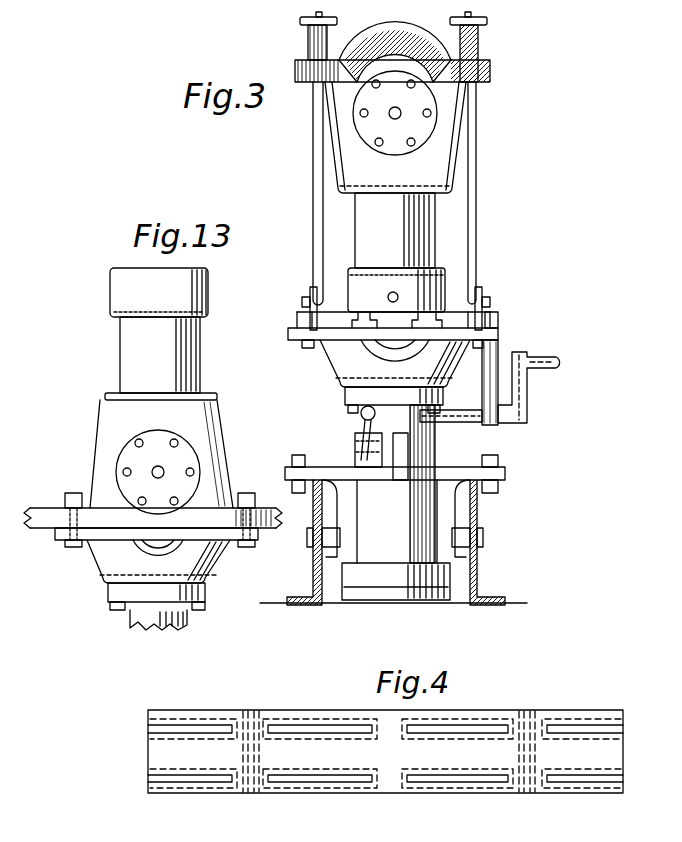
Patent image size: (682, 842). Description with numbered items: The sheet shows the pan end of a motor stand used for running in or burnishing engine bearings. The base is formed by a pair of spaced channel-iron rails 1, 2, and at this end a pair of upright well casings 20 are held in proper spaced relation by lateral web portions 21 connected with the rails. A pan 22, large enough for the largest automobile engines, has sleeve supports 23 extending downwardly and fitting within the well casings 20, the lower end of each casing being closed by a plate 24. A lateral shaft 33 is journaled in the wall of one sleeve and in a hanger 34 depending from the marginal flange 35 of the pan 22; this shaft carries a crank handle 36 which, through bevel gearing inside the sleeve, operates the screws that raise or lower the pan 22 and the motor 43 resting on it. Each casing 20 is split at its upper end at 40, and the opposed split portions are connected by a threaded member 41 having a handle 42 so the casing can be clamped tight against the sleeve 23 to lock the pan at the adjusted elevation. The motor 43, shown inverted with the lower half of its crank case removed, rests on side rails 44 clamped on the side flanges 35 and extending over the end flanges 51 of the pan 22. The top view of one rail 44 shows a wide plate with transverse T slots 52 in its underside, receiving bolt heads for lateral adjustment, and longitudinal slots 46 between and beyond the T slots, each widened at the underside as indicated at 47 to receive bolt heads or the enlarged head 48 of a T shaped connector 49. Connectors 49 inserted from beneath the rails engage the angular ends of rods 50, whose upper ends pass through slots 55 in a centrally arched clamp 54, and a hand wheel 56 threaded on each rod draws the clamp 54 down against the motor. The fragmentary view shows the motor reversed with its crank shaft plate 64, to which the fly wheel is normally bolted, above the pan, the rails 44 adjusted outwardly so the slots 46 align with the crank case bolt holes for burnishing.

In FIG. 3, the rail 1 is at (315, 570).
In FIG. 3, the rail 2 is at (478, 572).
In FIG. 3, the well casing 20 is at (397, 521).
In FIG. 3, the lateral web portion 21 is at (328, 463).
In FIG. 3, the pan 22 is at (340, 364).
In FIG. 13, the pan 22 is at (103, 568).
In FIG. 13, the sleeve support 23 is at (132, 617).
In FIG. 3, the plate 24 is at (393, 592).
In FIG. 3, the shaft 33 is at (462, 410).
In FIG. 3, the hanger 34 is at (495, 355).
In FIG. 3, the marginal flange 35 is at (490, 328).
In FIG. 3, the crank handle 36 is at (528, 400).
In FIG. 3, the split 40 is at (395, 472).
In FIG. 3, the threaded member 41 is at (390, 452).
In FIG. 3, the handle 42 is at (361, 412).
In FIG. 3, the motor 43 is at (428, 228).
In FIG. 3, the side rail 44 is at (308, 306).
In FIG. 13, the side rail 44 is at (40, 523).
In FIG. 4, the side rail 44 is at (545, 710).
In FIG. 4, the slot 46 is at (283, 725).
In FIG. 3, the widened slot portion 47 is at (297, 318).
In FIG. 3, the enlarged head 48 is at (290, 334).
In FIG. 3, the T shaped connector 49 is at (313, 287).
In FIG. 3, the rod 50 is at (314, 211).
In FIG. 3, the end flange 51 is at (337, 343).
In FIG. 4, the T slot 52 is at (384, 793).
In FIG. 3, the clamp 54 is at (380, 33).
In FIG. 3, the slot 55 is at (490, 70).
In FIG. 3, the hand wheel 56 is at (308, 27).
In FIG. 3, the plate 64 is at (389, 148).